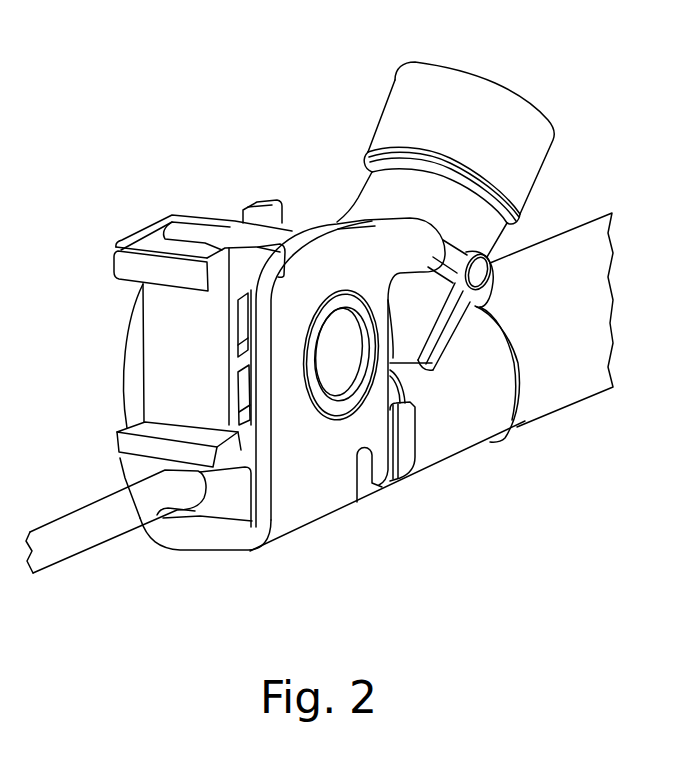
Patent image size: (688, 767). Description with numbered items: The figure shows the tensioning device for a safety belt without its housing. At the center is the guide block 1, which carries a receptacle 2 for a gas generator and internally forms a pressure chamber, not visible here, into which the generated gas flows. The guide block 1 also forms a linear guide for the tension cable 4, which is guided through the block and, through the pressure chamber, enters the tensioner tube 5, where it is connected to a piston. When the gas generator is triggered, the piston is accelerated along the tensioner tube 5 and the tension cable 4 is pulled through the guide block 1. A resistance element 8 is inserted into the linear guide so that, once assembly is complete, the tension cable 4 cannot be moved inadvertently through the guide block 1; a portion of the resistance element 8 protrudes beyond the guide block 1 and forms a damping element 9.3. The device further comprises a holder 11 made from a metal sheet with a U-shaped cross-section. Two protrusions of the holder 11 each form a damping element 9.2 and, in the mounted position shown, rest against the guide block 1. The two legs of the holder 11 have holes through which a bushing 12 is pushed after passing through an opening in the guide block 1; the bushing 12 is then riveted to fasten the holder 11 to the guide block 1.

The guide block 1 is at (475, 440).
The receptacle 2 is at (506, 110).
The tension cable 4 is at (75, 548).
The tensioner tube 5 is at (573, 387).
The resistance element 8 is at (262, 532).
The damping element 9.2 is at (378, 480).
The damping element 9.3 is at (222, 500).
The holder 11 is at (318, 510).
The bushing 12 is at (333, 332).